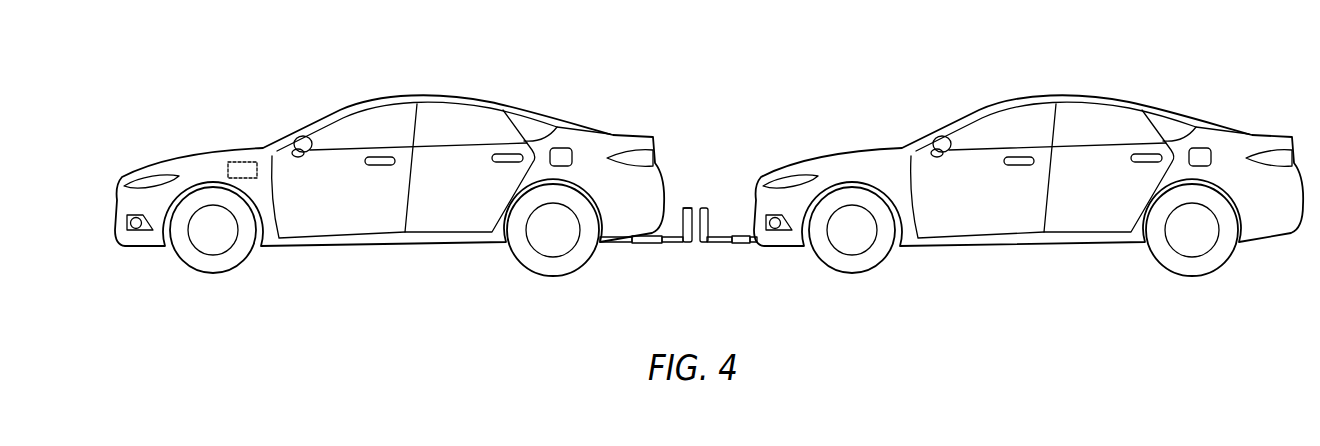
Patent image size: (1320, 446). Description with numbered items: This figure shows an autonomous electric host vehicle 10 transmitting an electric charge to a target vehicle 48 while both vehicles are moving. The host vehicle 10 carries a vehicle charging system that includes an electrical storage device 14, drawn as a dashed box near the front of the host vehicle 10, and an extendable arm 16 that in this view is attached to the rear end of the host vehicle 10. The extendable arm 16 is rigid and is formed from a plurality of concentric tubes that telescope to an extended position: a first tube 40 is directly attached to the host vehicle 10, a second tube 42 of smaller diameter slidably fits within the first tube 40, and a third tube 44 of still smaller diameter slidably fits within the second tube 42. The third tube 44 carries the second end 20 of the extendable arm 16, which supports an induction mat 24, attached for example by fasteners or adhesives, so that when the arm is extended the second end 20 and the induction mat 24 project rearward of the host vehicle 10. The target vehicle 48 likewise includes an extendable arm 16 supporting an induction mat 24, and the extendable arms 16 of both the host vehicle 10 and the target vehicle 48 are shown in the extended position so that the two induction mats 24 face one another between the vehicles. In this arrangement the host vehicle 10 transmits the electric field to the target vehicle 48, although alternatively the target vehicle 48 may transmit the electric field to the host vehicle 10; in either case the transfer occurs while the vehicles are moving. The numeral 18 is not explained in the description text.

The host vehicle 10 is at (542, 77).
The electrical storage device 14 is at (240, 162).
The extendable arm 16 is at (674, 204).
The tow bar 18 is at (674, 200).
The second end 20 is at (686, 244).
The induction mat 24 is at (684, 210).
The first tube 40 is at (615, 247).
The second tube 42 is at (647, 247).
The third tube 44 is at (675, 247).
The target vehicle 48 is at (1190, 73).